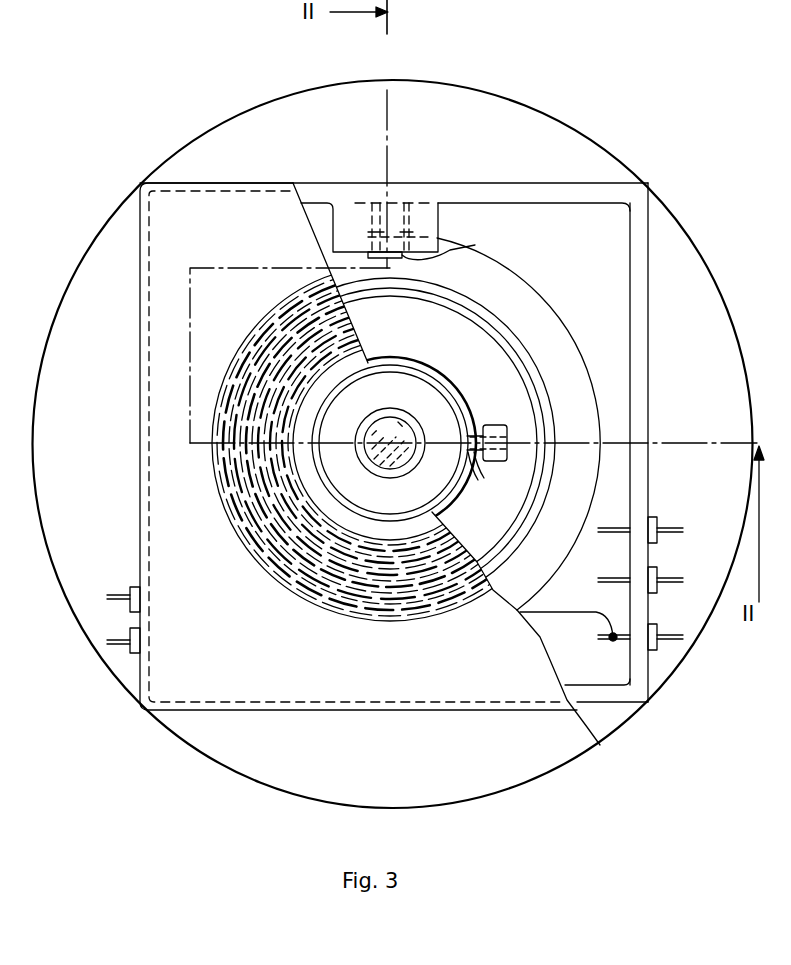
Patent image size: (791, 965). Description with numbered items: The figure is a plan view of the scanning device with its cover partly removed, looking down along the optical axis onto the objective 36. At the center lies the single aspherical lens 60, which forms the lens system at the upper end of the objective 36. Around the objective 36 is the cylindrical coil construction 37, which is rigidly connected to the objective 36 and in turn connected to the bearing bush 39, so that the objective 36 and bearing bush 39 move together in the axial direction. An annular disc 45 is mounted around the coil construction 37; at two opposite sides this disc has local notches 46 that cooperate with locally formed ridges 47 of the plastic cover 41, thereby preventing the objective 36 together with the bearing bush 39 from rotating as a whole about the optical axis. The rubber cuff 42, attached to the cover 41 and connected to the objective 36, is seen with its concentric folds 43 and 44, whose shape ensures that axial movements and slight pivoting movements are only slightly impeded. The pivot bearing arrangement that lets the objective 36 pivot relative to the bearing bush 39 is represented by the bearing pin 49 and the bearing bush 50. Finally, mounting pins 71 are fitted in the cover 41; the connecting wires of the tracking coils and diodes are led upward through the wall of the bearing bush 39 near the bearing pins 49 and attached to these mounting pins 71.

The objective 36 is at (462, 391).
The coil construction 37 is at (546, 476).
The bearing bush 39 is at (455, 345).
The cover 41 is at (580, 162).
The rubber cuff 42 is at (287, 672).
The concentric fold 43 is at (255, 352).
The concentric fold 44 is at (293, 338).
The annular disc 45 is at (567, 373).
The notch 46 is at (404, 253).
The ridge 47 is at (376, 215).
The bearing pin 49 is at (472, 470).
The bearing bush 50 is at (480, 425).
The aspherical lens 60 is at (393, 425).
The mounting pin 71 is at (683, 530).